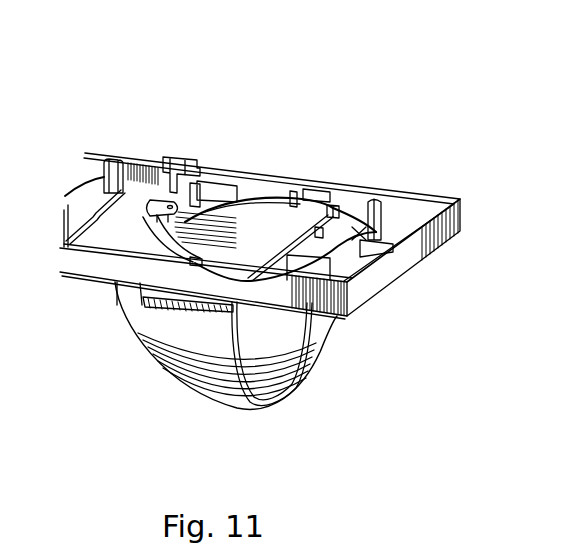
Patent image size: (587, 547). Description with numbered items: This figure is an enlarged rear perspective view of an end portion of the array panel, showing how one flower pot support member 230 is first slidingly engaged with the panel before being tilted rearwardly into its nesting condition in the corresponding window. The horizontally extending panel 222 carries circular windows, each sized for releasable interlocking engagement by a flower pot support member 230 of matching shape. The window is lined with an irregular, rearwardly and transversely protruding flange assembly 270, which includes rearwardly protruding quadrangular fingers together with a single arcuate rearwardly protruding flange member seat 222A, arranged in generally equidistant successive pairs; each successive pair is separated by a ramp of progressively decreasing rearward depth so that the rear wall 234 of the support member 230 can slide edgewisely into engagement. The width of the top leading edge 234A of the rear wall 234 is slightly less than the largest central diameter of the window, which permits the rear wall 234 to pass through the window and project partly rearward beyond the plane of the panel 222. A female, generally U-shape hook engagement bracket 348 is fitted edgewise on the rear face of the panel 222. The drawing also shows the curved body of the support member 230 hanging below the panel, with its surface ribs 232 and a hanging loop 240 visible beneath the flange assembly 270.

The panel 222 is at (70, 268).
The arcuate flange member seat 222A is at (130, 250).
The hook engagement bracket 348 is at (195, 152).
The rear wall 234 is at (237, 240).
The top leading edge 234A is at (332, 204).
The flange assembly 270 is at (365, 262).
The flower pot support member 230 is at (151, 366).
The dome ribs 232 is at (217, 367).
The hanging loop 240 is at (235, 407).